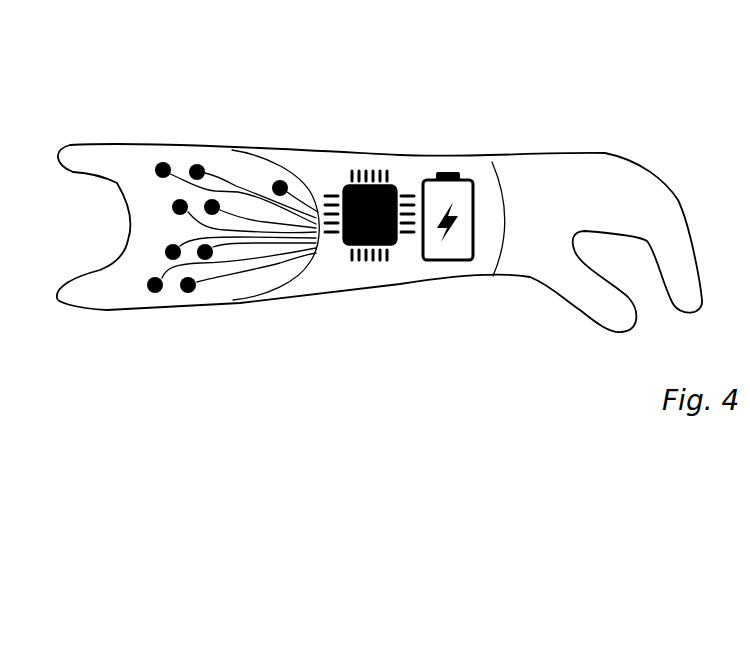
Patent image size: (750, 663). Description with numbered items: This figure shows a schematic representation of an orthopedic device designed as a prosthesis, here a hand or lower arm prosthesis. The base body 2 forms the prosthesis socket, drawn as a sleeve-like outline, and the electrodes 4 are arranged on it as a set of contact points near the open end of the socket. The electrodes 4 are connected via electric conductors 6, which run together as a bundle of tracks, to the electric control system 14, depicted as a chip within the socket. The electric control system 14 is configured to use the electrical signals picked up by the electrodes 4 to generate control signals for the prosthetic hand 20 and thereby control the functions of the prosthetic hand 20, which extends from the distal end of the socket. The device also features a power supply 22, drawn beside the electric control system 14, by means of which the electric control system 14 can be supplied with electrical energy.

The base body 2 is at (122, 157).
The electrodes 4 is at (160, 291).
The electric conductors 6 is at (257, 192).
The electric control system 14 is at (388, 246).
The prosthetic hand 20 is at (593, 128).
The power supply 22 is at (473, 181).